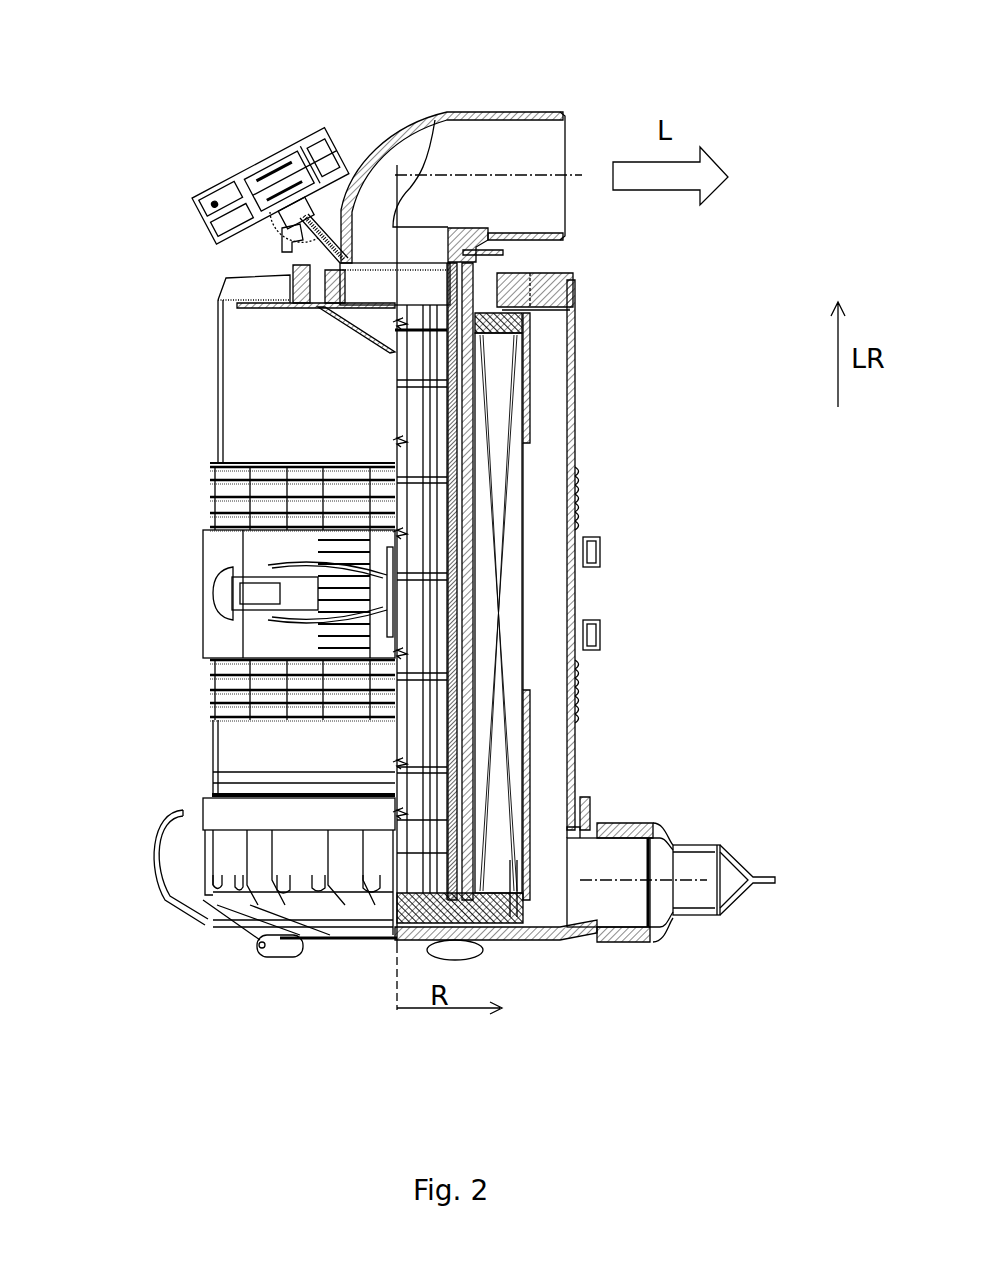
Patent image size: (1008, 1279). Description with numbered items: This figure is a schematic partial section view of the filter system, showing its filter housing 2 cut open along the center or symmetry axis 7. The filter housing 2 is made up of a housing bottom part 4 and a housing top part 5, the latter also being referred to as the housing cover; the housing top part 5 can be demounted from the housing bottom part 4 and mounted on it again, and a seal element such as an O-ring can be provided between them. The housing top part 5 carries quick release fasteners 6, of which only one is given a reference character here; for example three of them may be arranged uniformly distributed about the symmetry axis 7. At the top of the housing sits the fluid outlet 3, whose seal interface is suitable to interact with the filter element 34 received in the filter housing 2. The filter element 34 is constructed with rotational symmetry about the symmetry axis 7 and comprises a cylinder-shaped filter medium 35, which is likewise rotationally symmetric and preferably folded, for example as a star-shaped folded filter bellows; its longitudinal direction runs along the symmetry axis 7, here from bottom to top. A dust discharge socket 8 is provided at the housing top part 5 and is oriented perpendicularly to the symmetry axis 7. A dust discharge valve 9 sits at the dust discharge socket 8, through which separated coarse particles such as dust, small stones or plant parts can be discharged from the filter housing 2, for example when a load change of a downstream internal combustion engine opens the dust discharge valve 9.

The filter housing 2 is at (101, 421).
The fluid outlet 3 is at (481, 110).
The housing bottom part 4 is at (217, 405).
The housing top part 5 is at (193, 799).
The quick release fastener 6 is at (150, 843).
The symmetry axis 7 is at (395, 988).
The dust discharge socket 8 is at (572, 933).
The dust discharge valve 9 is at (693, 917).
The filter element 34 is at (520, 525).
The filter medium 35 is at (508, 608).